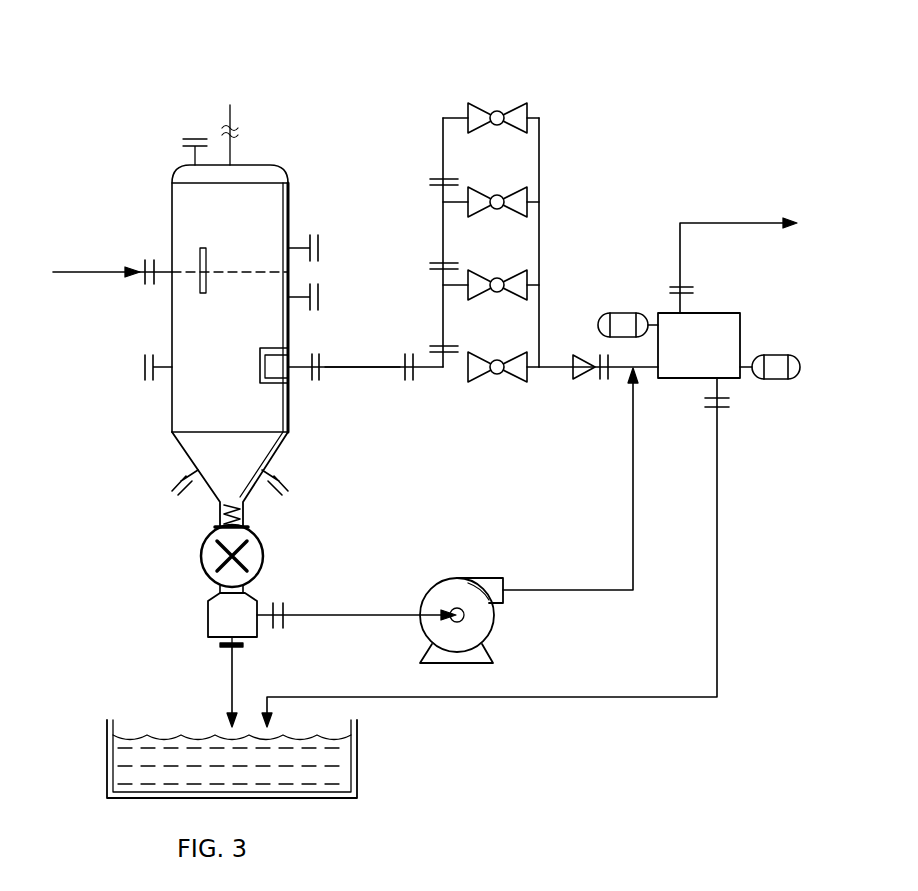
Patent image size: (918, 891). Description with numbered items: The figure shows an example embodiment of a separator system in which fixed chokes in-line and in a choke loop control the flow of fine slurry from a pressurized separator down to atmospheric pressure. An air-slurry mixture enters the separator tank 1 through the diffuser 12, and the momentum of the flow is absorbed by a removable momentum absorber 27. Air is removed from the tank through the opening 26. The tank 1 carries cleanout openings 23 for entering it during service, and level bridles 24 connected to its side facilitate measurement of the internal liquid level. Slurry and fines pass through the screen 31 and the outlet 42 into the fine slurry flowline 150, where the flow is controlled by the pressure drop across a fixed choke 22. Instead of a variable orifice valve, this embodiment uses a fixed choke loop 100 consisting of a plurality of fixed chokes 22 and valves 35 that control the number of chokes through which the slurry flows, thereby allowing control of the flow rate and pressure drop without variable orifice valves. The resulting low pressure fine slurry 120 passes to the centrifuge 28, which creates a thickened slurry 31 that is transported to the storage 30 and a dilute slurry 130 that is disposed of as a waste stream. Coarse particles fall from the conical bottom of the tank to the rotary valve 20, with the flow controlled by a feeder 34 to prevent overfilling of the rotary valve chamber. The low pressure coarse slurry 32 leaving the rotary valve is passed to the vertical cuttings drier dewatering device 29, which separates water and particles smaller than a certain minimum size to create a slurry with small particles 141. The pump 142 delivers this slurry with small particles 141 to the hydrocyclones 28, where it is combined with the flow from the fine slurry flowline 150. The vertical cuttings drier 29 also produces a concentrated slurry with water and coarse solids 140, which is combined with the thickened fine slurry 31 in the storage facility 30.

The separator tank 1 is at (172, 188).
The diffuser 12 is at (102, 272).
The rotary valve 20 is at (202, 556).
The fixed choke 22 is at (442, 177).
The cleanout openings 23 is at (148, 357).
The level bridles 24 is at (318, 243).
The opening 26 is at (230, 113).
The removable momentum absorber 27 is at (204, 248).
The centrifuge 28 is at (715, 313).
The vertical cuttings drier dewatering device 29 is at (208, 622).
The storage 30 is at (107, 758).
The screen 31 is at (260, 365).
The low pressure coarse slurry 32 is at (274, 583).
The feeder 34 is at (220, 517).
The valves 35 is at (497, 111).
The outlet 42 is at (315, 383).
The fixed choke loop 100 is at (568, 101).
The low pressure fine slurry 120 is at (601, 381).
The dilute slurry 130 is at (733, 223).
The concentrated slurry with water and coarse solids 140 is at (230, 688).
The slurry with small particles 141 is at (585, 590).
The pump 142 is at (455, 578).
The fine slurry flowline 150 is at (383, 372).